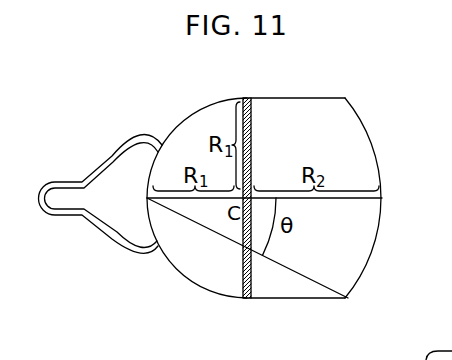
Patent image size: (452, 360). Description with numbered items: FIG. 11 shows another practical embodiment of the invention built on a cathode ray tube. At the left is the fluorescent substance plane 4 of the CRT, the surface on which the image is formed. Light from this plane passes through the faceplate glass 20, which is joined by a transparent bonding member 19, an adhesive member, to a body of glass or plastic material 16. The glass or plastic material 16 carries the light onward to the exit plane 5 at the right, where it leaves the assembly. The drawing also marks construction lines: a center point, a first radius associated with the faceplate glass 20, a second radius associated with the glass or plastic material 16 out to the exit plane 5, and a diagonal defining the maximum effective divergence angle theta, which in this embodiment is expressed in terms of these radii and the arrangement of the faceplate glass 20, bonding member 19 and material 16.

The fluorescent substance plane 4 is at (147, 199).
The exit plane 5 is at (368, 141).
The glass or plastic material 16 is at (312, 98).
The transparent bonding member 19 is at (243, 98).
The faceplate glass 20 is at (207, 120).